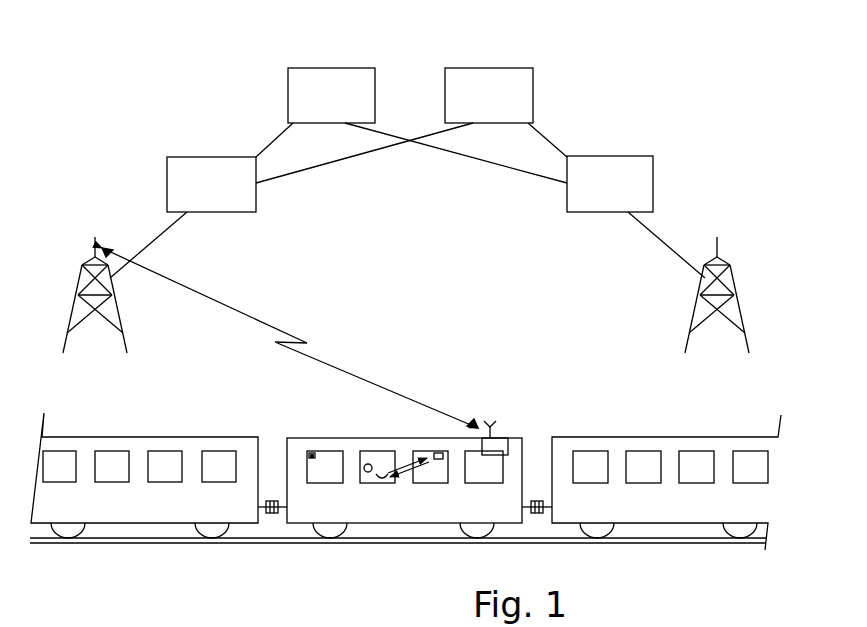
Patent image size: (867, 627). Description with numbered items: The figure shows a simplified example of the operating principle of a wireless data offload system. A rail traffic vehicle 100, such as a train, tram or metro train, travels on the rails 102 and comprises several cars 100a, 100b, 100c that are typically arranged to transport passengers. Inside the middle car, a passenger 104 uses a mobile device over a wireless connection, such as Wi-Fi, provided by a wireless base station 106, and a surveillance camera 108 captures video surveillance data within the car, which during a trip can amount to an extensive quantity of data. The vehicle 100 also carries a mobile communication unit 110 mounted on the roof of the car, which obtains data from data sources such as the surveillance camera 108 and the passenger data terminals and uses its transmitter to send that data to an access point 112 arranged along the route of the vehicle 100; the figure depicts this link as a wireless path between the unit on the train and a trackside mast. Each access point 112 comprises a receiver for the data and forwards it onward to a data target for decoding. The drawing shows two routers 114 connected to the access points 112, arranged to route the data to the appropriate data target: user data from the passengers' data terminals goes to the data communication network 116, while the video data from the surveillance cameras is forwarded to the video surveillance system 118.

The rail traffic vehicle 100 is at (406, 485).
The car 100a is at (140, 446).
The car 100b is at (518, 462).
The car 100c is at (672, 446).
The rails 102 is at (372, 544).
The passenger 104 is at (367, 458).
The wireless base station 106 is at (440, 454).
The surveillance camera 108 is at (312, 454).
The mobile communication unit 110 is at (493, 441).
The access point 112 is at (83, 265).
The router 114 is at (182, 162).
The data communication network 116 is at (298, 72).
The video surveillance system 118 is at (526, 74).